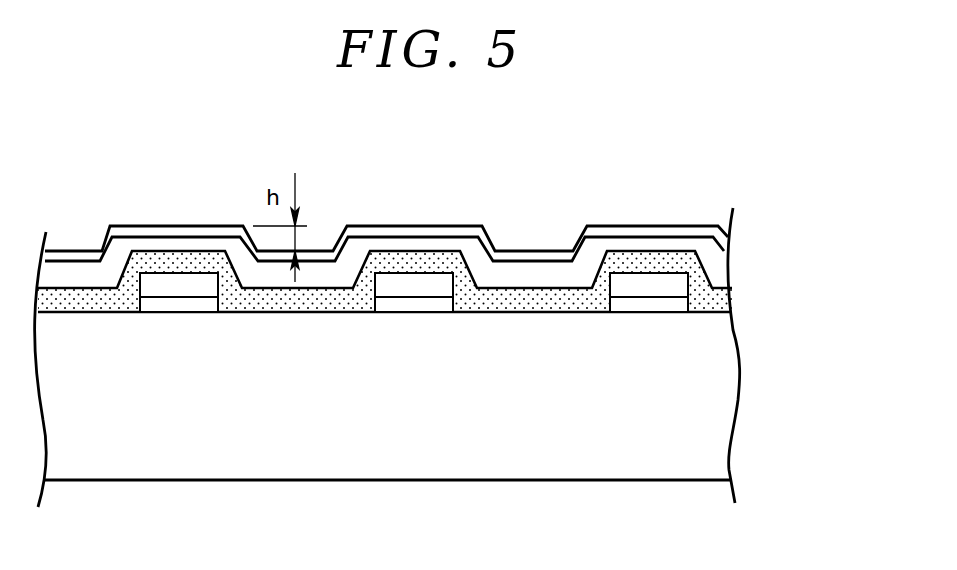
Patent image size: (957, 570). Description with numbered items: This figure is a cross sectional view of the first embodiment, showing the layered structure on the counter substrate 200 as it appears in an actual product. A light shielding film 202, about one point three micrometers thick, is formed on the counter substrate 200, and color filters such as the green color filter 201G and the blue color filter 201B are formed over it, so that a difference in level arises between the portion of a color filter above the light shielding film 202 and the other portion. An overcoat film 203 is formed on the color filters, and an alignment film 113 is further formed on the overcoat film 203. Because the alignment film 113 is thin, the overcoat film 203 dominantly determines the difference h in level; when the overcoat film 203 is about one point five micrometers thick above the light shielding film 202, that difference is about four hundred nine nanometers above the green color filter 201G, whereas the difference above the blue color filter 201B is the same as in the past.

The counter substrate 200 is at (722, 407).
The light shielding film 202 is at (675, 305).
The green color filter 201G is at (615, 258).
The blue color filter 201B is at (670, 287).
The overcoat film 203 is at (393, 242).
The alignment film 113 is at (463, 223).